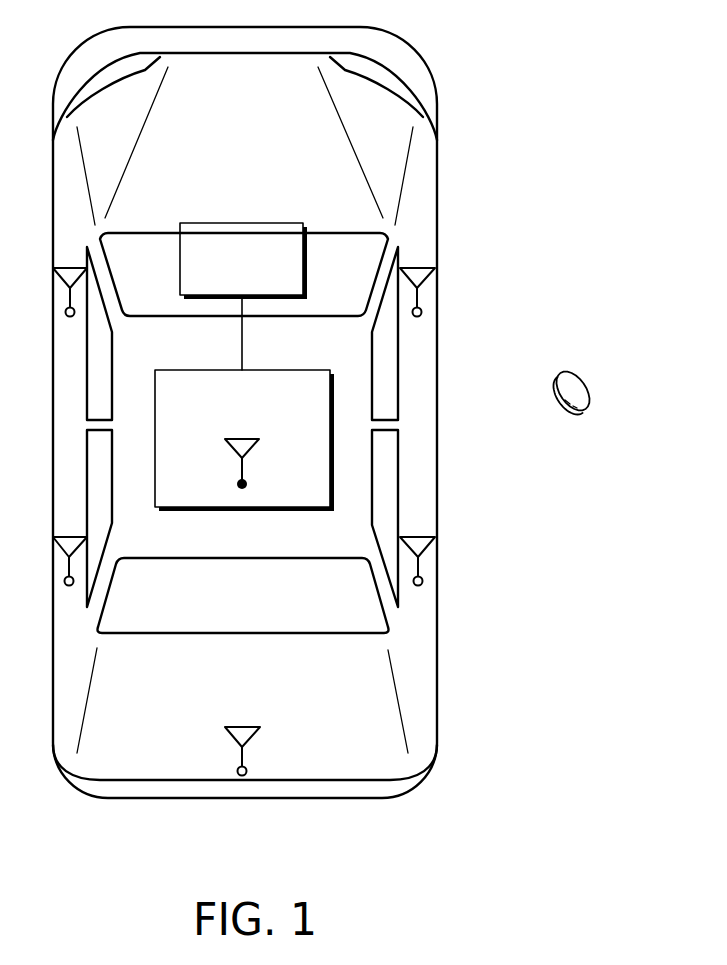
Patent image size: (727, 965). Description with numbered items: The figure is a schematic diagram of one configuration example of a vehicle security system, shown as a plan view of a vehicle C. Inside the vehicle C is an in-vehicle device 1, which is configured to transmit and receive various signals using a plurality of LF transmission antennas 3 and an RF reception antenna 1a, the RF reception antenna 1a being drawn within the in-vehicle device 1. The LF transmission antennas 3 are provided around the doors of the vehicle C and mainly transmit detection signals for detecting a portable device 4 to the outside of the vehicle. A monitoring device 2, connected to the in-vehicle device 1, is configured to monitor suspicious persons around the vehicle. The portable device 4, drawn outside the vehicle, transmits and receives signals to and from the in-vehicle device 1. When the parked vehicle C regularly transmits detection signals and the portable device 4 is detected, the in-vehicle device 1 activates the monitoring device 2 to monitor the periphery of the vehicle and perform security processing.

The vehicle C is at (433, 87).
The in-vehicle device 1 is at (273, 369).
The RF reception antenna 1a is at (252, 440).
The monitoring device 2 is at (267, 221).
The LF transmission antenna 3 is at (53, 268).
The portable device 4 is at (580, 374).